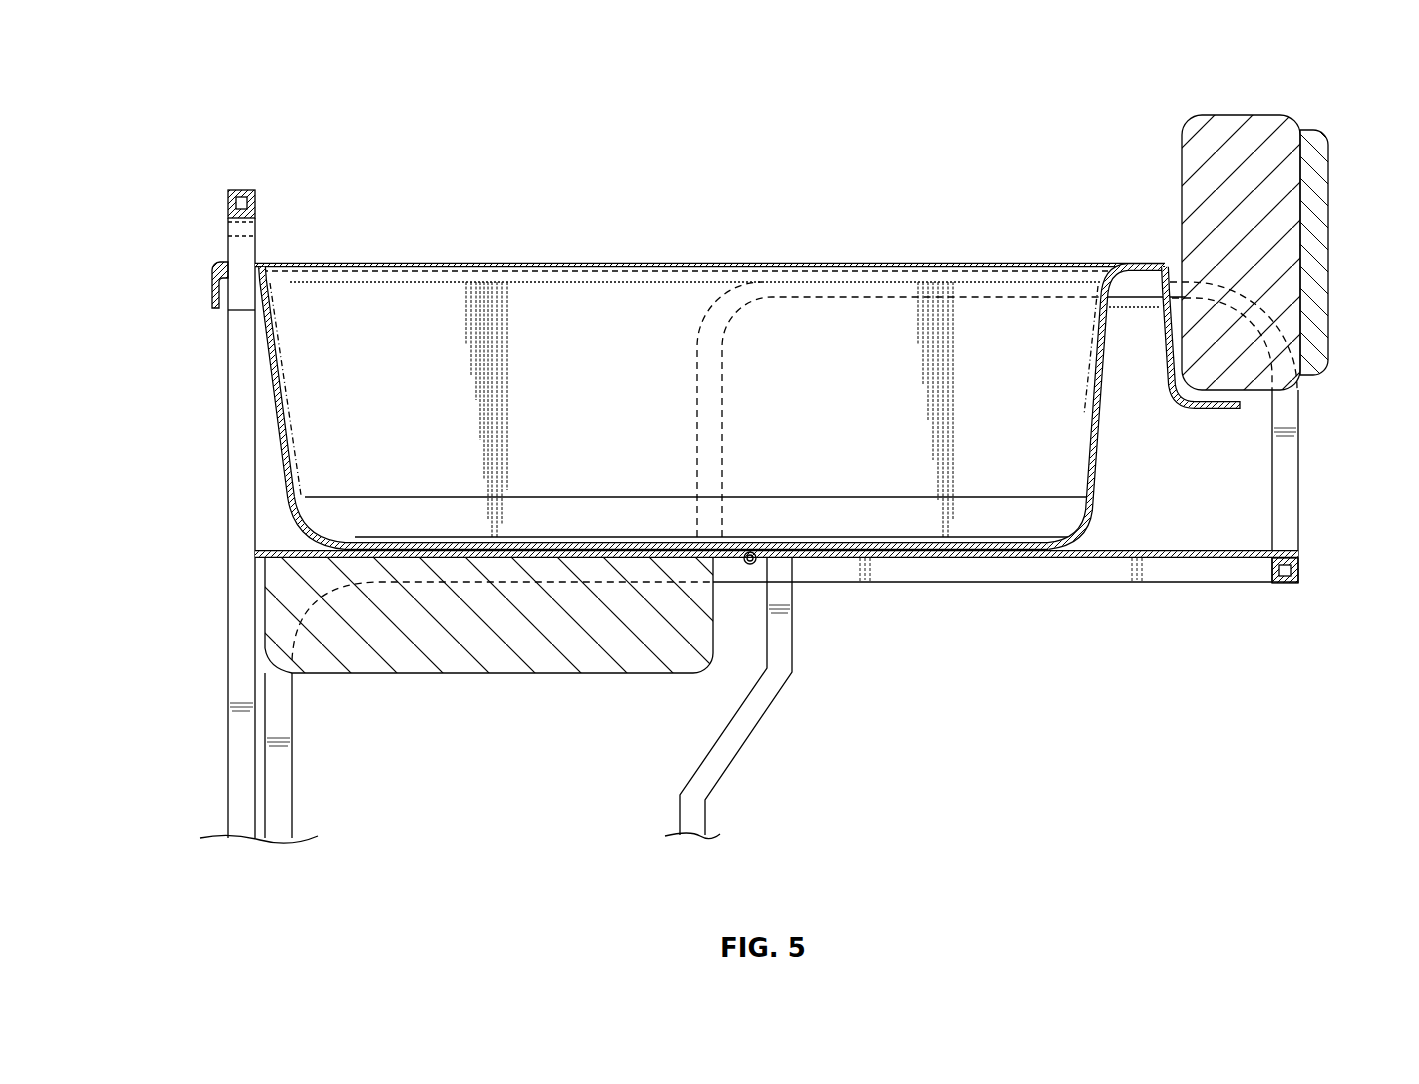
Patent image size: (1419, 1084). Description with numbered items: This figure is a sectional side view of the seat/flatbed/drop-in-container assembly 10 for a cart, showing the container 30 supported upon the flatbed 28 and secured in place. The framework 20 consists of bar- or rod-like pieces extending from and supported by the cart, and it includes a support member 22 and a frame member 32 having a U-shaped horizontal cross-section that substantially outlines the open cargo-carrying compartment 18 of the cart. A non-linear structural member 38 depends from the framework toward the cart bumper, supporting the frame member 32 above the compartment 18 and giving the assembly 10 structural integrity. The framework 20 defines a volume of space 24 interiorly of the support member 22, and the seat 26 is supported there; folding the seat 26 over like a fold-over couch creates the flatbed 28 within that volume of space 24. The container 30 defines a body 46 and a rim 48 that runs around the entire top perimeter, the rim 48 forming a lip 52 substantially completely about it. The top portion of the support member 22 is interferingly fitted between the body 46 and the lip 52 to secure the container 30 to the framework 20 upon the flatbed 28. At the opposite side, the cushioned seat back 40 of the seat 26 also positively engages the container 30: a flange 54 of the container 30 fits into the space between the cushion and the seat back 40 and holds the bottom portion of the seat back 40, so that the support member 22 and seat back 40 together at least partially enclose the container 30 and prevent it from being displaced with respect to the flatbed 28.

The assembly 10 is at (818, 174).
The compartment 18 is at (953, 690).
The framework 20 is at (205, 512).
The support member 22 is at (256, 243).
The volume of space 24 is at (1245, 518).
The seat 26 is at (1300, 117).
The flatbed 28 is at (1120, 548).
The container 30 is at (1098, 440).
The frame member 32 is at (930, 572).
The structural member 38 is at (750, 748).
The seat back 40 is at (1182, 200).
The body 46 is at (328, 377).
The rim 48 is at (565, 264).
The lip 52 is at (212, 296).
The flange 54 is at (1243, 403).